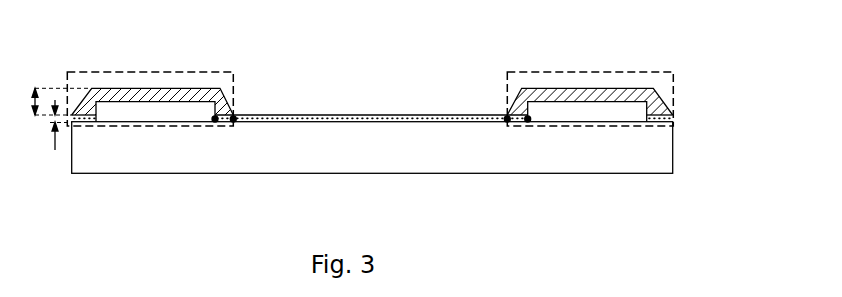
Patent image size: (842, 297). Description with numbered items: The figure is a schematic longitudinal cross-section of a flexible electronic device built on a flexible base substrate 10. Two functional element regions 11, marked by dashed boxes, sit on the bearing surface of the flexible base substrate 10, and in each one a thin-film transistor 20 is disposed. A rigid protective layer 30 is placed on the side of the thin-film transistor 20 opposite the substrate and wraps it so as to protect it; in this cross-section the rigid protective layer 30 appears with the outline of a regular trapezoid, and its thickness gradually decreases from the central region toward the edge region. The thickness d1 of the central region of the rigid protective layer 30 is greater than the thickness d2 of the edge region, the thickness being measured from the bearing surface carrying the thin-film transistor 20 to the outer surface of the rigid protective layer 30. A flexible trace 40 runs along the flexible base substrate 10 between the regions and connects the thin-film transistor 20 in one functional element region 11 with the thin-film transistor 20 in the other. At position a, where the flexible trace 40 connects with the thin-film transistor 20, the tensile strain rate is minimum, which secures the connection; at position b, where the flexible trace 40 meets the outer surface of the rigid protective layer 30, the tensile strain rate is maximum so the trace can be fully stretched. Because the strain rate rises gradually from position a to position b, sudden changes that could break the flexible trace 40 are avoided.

The flexible base substrate 10 is at (84, 151).
The functional element region 11 is at (110, 62).
The thin-film transistor 20 is at (150, 120).
The rigid protective layer 30 is at (183, 108).
The flexible trace 40 is at (337, 107).
The position a is at (215, 119).
The position b is at (233, 119).
The thickness of central region d1 is at (51, 102).
The thickness of edge region d2 is at (52, 125).